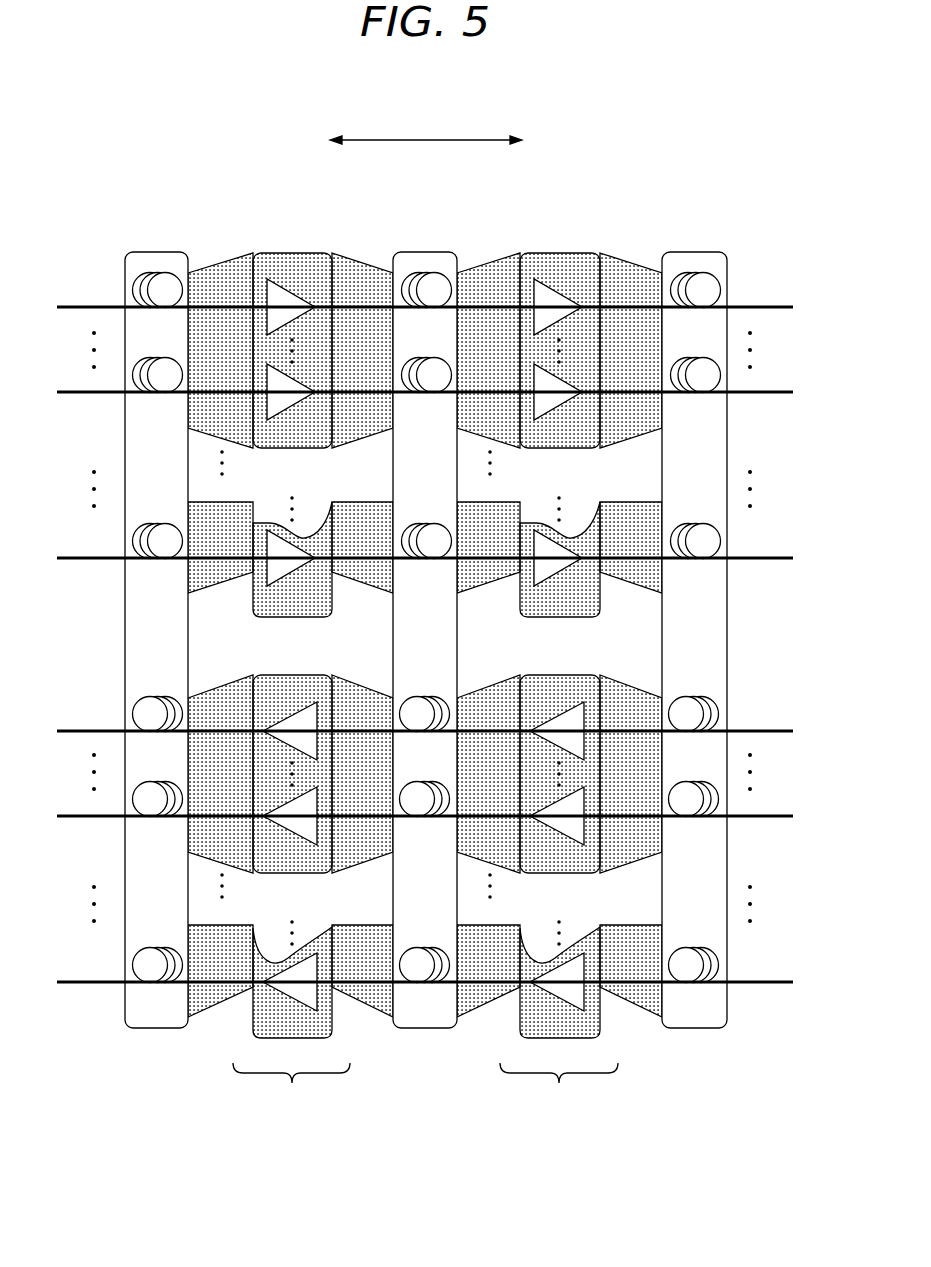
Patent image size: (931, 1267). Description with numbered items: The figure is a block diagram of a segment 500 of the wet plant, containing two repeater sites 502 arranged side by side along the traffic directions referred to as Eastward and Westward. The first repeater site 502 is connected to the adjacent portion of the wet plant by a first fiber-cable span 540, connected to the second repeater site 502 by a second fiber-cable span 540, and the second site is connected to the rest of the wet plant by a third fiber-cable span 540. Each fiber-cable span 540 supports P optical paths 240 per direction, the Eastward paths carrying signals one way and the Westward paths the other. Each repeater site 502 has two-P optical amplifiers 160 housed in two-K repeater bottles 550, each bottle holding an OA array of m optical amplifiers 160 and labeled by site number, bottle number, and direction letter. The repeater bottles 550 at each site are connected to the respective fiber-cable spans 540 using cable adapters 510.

The segment 500 is at (445, 81).
The fiber-cable span 540 is at (426, 614).
The repeater bottle 550 is at (574, 952).
The optical amplifier 160 is at (283, 280).
The cable adapter 510 is at (425, 646).
The optical path 240 is at (76, 305).
The repeater site 502 is at (425, 1096).